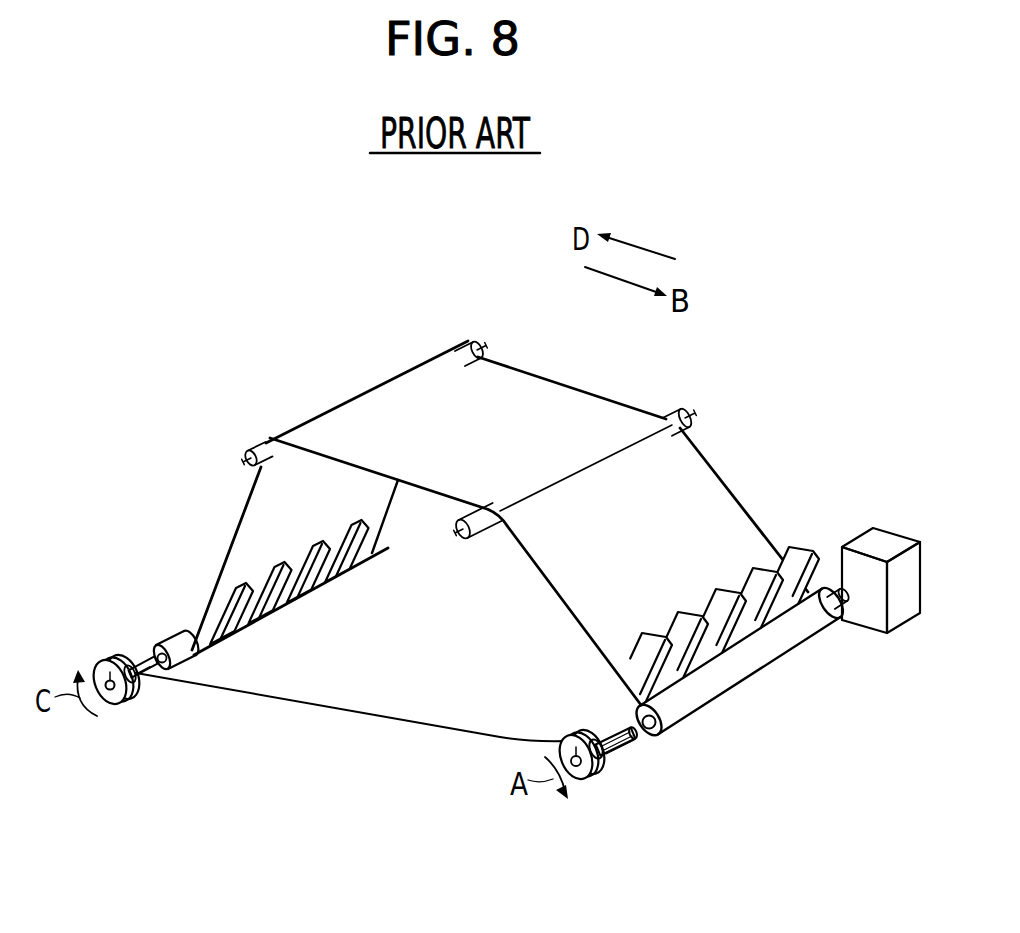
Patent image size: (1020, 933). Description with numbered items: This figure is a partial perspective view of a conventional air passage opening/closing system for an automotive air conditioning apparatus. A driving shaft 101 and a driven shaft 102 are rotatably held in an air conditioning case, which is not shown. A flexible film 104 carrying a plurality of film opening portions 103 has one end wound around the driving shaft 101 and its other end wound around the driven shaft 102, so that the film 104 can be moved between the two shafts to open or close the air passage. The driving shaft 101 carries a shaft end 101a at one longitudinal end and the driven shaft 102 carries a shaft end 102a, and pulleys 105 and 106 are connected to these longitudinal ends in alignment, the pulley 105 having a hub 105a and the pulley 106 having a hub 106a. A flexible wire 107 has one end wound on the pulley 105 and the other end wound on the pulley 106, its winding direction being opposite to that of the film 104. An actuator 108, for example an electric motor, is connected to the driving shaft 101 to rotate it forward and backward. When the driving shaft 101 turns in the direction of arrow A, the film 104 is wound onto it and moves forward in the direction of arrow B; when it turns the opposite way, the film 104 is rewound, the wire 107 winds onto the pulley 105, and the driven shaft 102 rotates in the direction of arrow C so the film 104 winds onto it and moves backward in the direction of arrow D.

The driving shaft 101 is at (670, 726).
The roller shaft 101a is at (655, 733).
The driven shaft 102 is at (164, 639).
The roller shaft 102a is at (147, 657).
The film opening portions 103 is at (288, 598).
The flexible film 104 is at (564, 407).
The pulley 105 is at (578, 783).
The pulley shaft 105a is at (622, 746).
The pulley 106 is at (115, 703).
The pulley shaft 106a is at (145, 673).
The flexible wire 107 is at (384, 693).
The actuator 108 is at (889, 540).